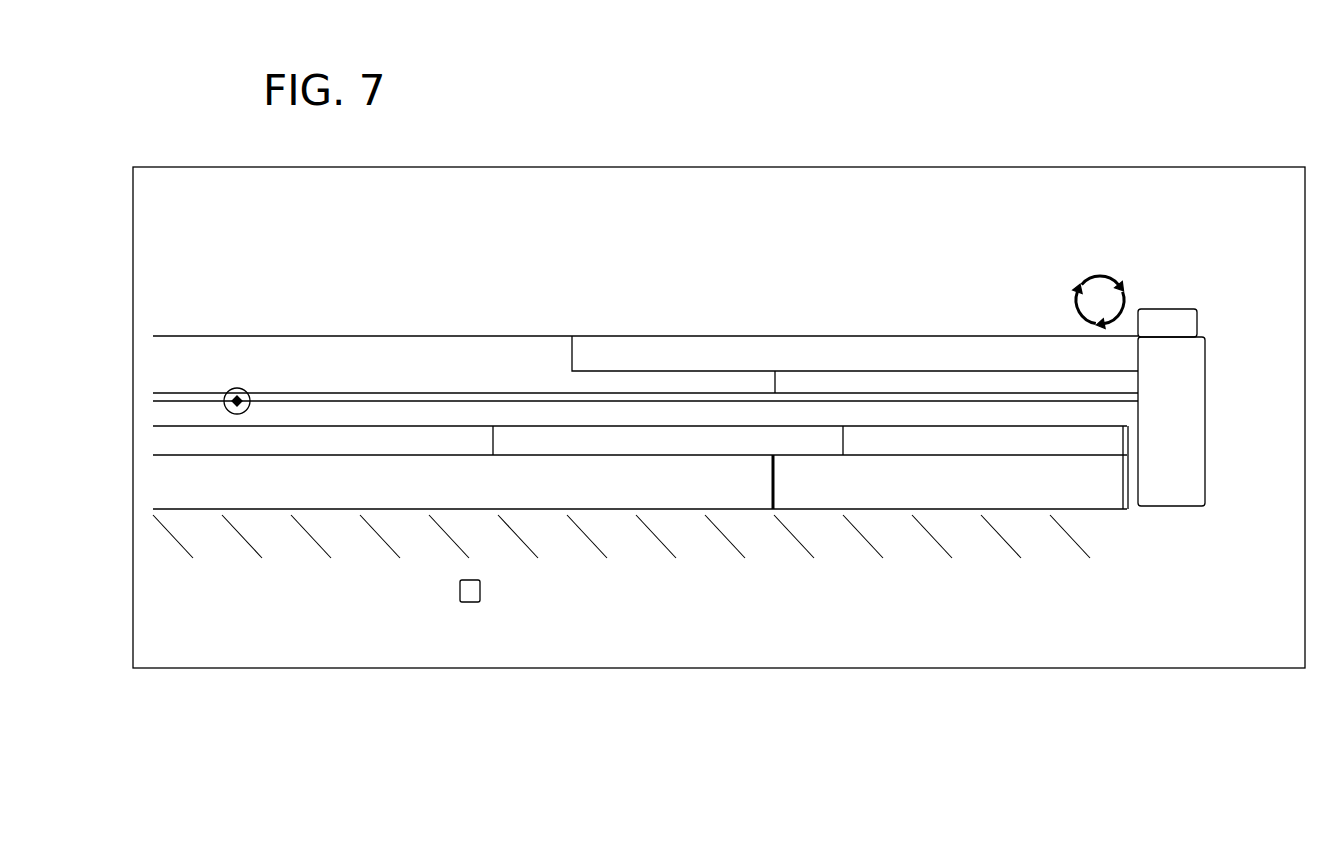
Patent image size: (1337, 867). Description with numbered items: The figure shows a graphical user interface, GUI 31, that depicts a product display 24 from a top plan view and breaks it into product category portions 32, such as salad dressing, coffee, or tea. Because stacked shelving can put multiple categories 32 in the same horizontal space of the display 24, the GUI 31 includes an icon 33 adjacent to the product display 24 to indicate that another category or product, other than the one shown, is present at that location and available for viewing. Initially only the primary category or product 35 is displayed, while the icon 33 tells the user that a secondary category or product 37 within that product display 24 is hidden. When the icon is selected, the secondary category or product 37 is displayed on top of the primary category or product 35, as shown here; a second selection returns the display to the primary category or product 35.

The GUI 31 is at (1014, 210).
The icon 33 is at (1108, 272).
The primary category or product 35 is at (448, 360).
The secondary category or product 37 is at (647, 360).
The product category portions 32 is at (668, 492).
The product display 24 is at (1125, 511).